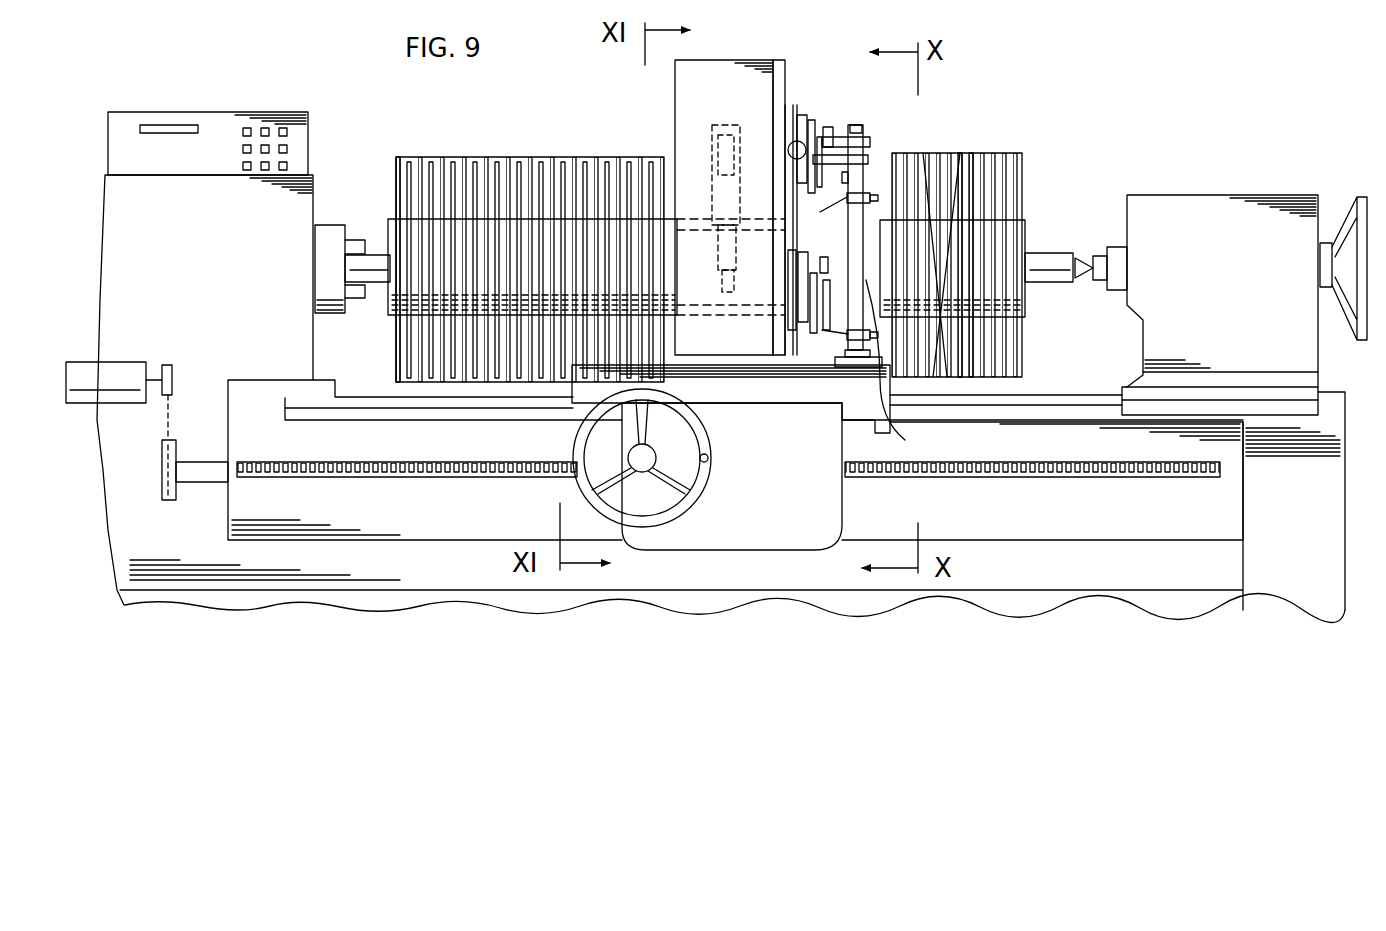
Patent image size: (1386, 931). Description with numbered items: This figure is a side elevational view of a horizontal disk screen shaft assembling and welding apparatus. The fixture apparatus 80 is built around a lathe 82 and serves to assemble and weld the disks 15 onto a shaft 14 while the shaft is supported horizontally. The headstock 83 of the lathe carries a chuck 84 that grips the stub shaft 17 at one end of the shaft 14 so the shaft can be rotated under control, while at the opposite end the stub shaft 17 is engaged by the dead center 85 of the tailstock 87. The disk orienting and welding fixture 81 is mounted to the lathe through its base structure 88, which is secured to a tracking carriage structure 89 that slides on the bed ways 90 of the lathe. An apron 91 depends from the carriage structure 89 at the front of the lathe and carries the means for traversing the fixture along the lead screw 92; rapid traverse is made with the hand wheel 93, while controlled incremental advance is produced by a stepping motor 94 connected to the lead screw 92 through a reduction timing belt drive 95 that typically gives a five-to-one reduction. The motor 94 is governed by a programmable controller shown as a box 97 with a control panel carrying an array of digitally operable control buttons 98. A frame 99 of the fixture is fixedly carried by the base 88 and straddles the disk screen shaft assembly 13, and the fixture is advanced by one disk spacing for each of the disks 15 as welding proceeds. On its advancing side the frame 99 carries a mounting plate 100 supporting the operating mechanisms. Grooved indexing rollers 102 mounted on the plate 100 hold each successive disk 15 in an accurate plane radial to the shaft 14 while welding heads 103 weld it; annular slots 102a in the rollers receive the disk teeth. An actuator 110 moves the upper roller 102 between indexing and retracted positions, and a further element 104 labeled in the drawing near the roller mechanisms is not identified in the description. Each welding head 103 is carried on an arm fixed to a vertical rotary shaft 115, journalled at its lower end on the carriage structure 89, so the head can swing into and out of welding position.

The disk screen shaft assembly 13 is at (514, 160).
The shaft 14 is at (883, 215).
The disks 15 is at (398, 168).
The stub shaft 17 is at (375, 260).
The fixture apparatus 80 is at (660, 148).
The disk orienting and welding fixture 81 is at (760, 57).
The lathe 82 is at (1245, 192).
The headstock 83 is at (220, 236).
The chuck 84 is at (352, 240).
The dead center 85 is at (1097, 262).
The tailstock 87 is at (1160, 200).
The base structure 88 is at (717, 365).
The tracking carriage structure 89 is at (765, 408).
The bed ways 90 is at (1045, 397).
The apron 91 is at (793, 509).
The lead screw 92 is at (432, 478).
The hand wheel 93 is at (688, 487).
The stepping motor 94 is at (125, 360).
The reduction timing belt drive 95 is at (172, 435).
The programmable controller 97 is at (232, 125).
The control buttons 98 is at (293, 148).
The frame 99 is at (710, 75).
The mounting panel or plate 100 is at (803, 118).
The grooved indexing rollers 102 is at (833, 155).
The annular slots 102a is at (840, 137).
The welding heads 103 is at (860, 213).
The tension arm 104 is at (790, 148).
The actuator 110 is at (712, 165).
The vertical rotary shaft 115 is at (842, 357).